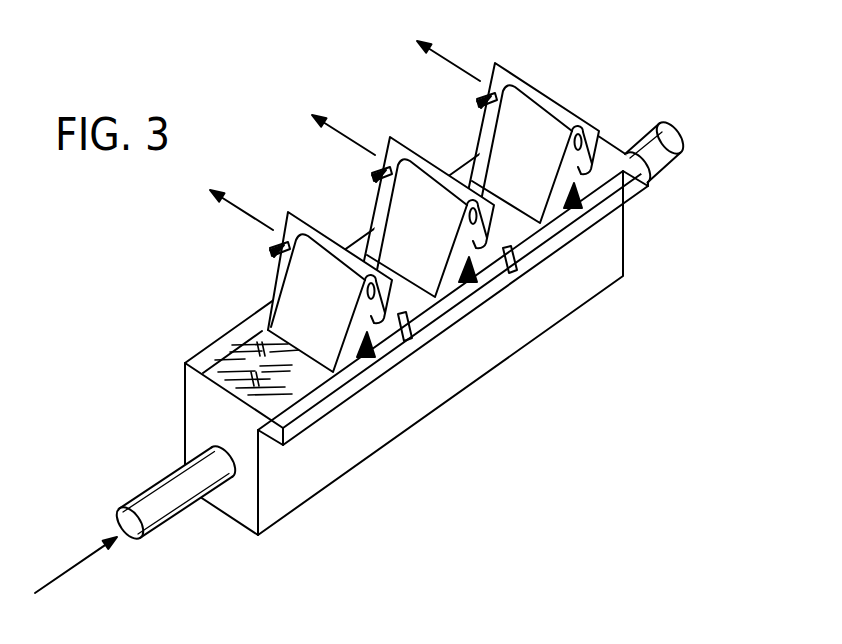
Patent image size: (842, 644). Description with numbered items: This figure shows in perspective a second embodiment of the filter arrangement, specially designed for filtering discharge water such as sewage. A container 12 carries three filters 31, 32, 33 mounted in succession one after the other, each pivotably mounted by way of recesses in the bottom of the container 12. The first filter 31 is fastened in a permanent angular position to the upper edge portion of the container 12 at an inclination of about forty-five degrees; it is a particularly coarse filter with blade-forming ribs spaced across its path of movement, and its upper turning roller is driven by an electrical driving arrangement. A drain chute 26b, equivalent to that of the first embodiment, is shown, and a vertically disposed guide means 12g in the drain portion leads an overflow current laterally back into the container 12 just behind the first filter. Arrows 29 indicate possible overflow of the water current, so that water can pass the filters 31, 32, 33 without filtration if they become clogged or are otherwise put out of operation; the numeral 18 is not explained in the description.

The container 12 is at (297, 487).
The guide means 12g is at (503, 243).
The shaft / drive direction arrow 18 is at (72, 567).
The drain chute 26b is at (276, 224).
The arrows 29 is at (516, 277).
The filter 31 is at (304, 286).
The filter 32 is at (410, 209).
The filter 33 is at (513, 137).